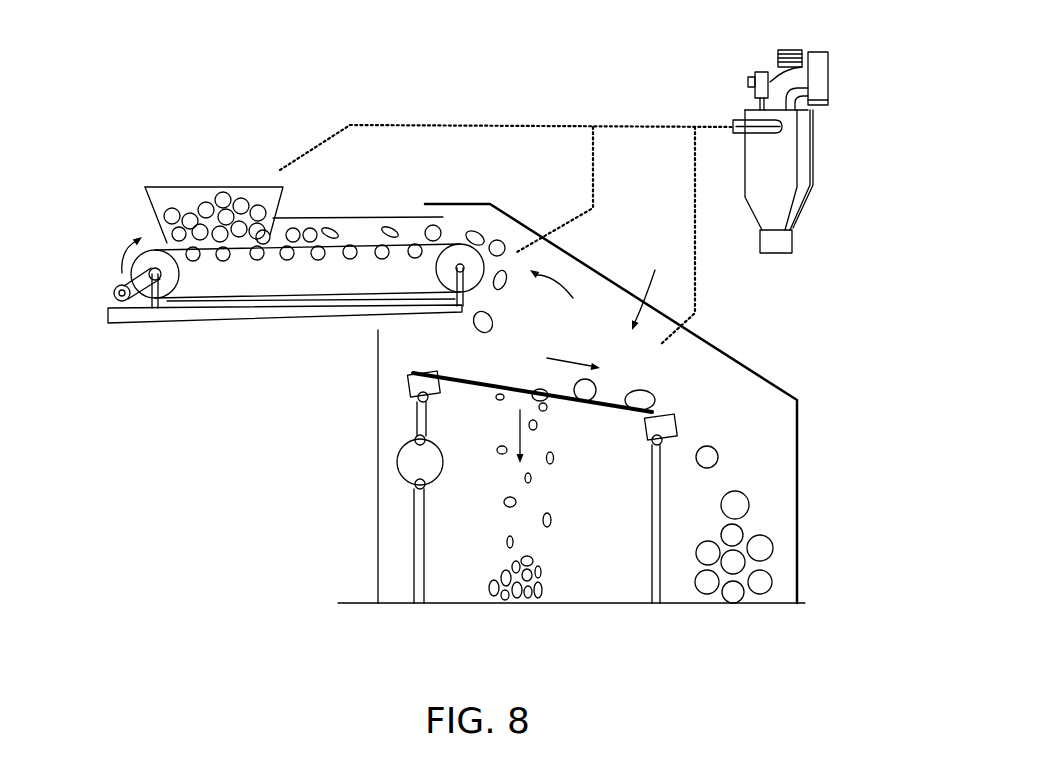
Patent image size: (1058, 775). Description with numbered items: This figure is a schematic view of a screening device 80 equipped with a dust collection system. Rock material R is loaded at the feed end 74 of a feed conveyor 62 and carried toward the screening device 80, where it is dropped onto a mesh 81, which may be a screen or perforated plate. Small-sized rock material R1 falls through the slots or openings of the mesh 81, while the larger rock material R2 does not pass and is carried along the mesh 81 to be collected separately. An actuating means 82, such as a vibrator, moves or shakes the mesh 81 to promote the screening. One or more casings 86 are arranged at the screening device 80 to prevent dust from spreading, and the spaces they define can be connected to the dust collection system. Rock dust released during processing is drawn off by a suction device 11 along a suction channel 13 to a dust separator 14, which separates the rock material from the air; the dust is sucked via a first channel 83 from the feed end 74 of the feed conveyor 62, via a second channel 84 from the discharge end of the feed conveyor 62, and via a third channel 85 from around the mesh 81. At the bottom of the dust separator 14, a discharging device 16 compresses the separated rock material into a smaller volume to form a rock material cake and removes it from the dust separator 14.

The suction device 11 is at (782, 31).
The suction channel 13 is at (737, 121).
The dust separator 14 is at (852, 128).
The discharging device 16 is at (783, 243).
The feed conveyor 62 is at (100, 202).
The feed end 74 is at (211, 164).
The screening device 80 is at (196, 486).
The mesh 81 is at (480, 383).
The actuating means 82 is at (405, 462).
The first channel 83 is at (405, 125).
The second channel 84 is at (592, 175).
The third channel 85 is at (693, 210).
The casing 86 is at (740, 362).
The rock material R is at (183, 210).
The small-sized rock material R1 is at (556, 458).
The larger rock material R2 is at (641, 397).